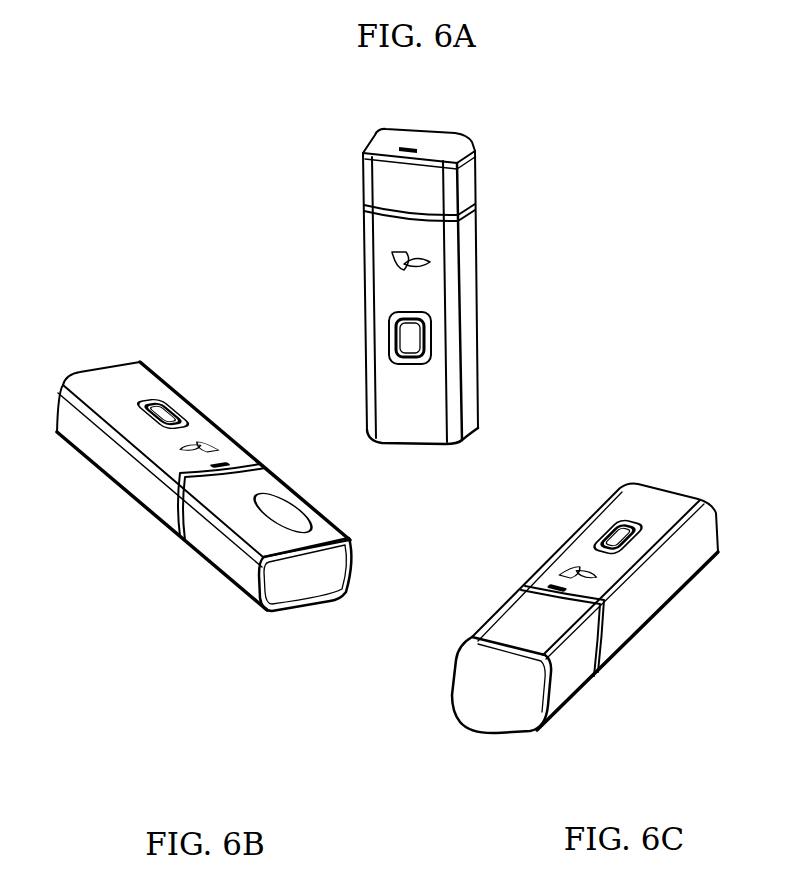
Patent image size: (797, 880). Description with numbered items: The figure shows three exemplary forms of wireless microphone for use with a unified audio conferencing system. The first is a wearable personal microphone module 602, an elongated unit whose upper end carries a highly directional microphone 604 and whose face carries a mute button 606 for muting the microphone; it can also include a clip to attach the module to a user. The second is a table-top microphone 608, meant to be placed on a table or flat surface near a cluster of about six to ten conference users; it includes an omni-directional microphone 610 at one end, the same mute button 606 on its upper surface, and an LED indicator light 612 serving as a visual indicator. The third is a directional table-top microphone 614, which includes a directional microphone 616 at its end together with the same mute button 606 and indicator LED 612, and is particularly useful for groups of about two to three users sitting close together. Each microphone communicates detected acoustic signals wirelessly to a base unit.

In FIG. 6A, the wearable personal microphone module (PMM) 602 is at (573, 237).
In FIG. 6A, the highly directional microphone 604 is at (437, 143).
In FIG. 6A, the mute button 606 is at (412, 342).
In FIG. 6B, the mute button 606 is at (162, 412).
In FIG. 6C, the mute button 606 is at (615, 534).
In FIG. 6B, the table-top microphone 608 is at (97, 318).
In FIG. 6B, the omni-directional microphone 610 is at (292, 512).
In FIG. 6B, the LED indicator light 612 is at (232, 460).
In FIG. 6C, the LED indicator light 612 is at (555, 585).
In FIG. 6C, the directional table-top microphone 614 is at (738, 480).
In FIG. 6C, the directional microphone 616 is at (523, 708).